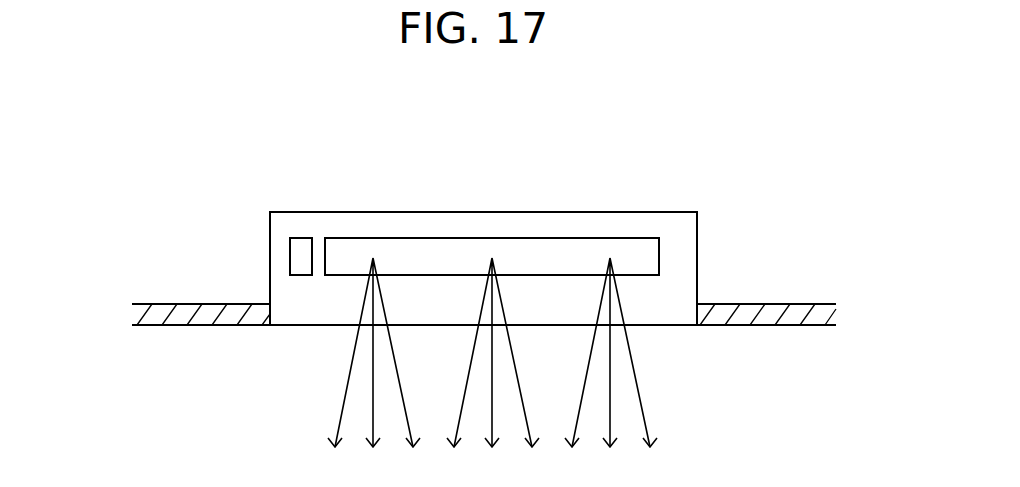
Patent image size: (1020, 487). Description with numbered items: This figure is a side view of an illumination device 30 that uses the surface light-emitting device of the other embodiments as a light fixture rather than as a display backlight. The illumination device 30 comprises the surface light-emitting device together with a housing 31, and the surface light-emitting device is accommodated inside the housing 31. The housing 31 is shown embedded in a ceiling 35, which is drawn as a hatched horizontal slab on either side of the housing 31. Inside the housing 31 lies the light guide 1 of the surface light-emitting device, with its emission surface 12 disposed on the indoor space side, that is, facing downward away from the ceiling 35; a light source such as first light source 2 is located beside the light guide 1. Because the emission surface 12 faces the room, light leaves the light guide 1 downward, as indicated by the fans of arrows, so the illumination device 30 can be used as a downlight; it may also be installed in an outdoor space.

The light guide 1 is at (455, 238).
The first light sources 2 is at (297, 238).
The emission surface 12 is at (633, 275).
The illumination device 30 is at (725, 223).
The housing 31 is at (563, 212).
The ceiling 35 is at (193, 326).